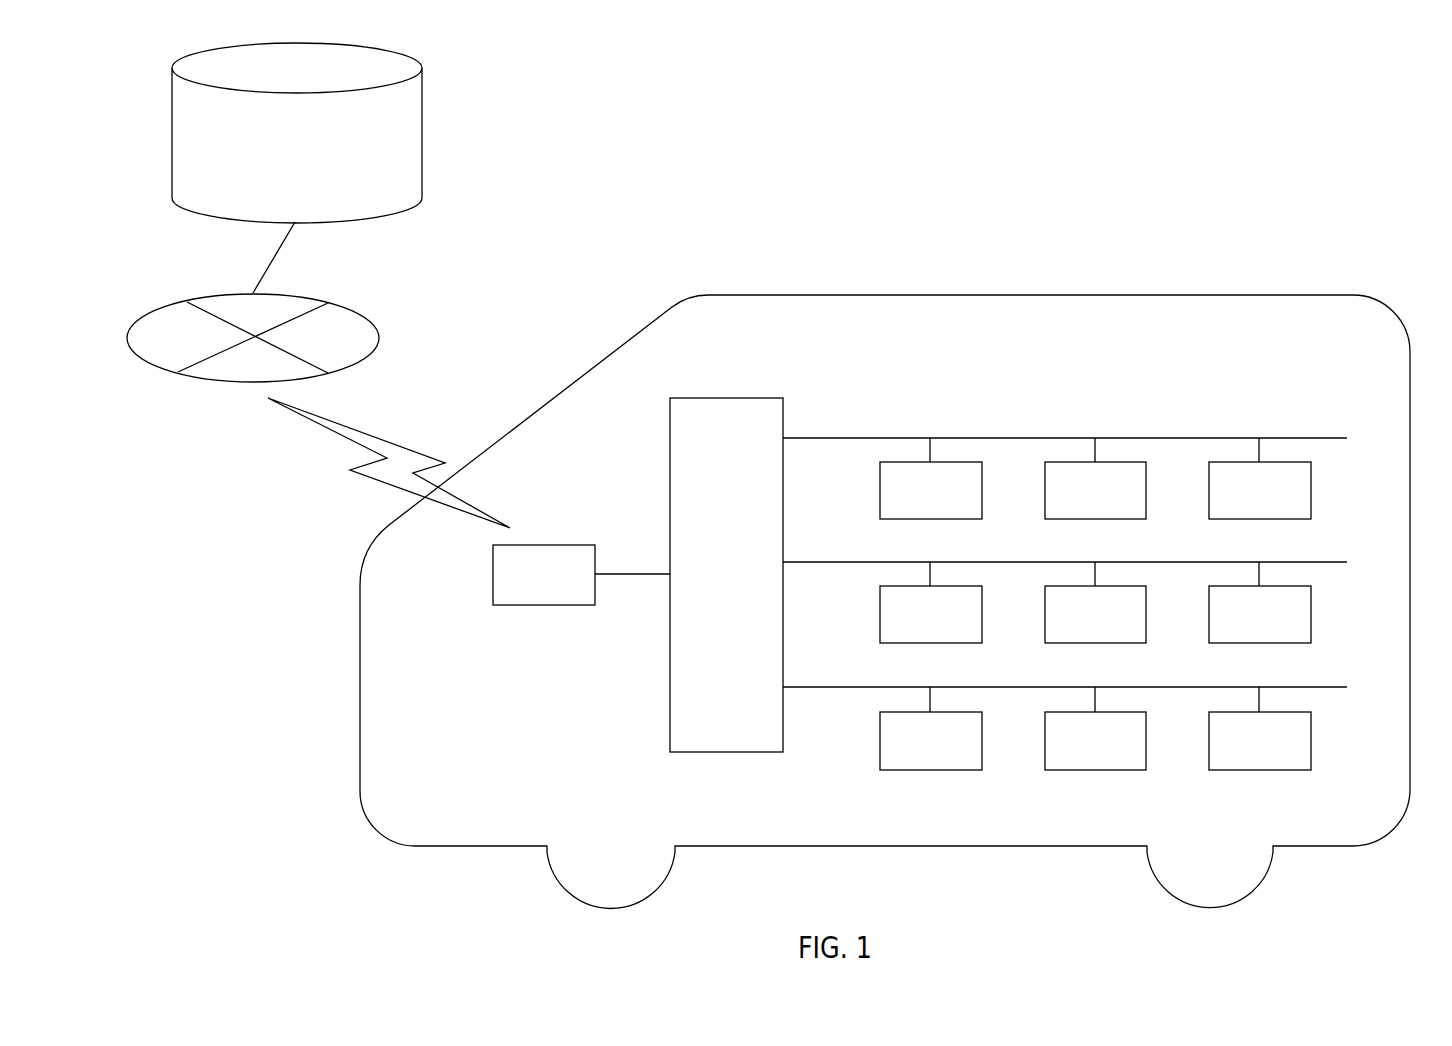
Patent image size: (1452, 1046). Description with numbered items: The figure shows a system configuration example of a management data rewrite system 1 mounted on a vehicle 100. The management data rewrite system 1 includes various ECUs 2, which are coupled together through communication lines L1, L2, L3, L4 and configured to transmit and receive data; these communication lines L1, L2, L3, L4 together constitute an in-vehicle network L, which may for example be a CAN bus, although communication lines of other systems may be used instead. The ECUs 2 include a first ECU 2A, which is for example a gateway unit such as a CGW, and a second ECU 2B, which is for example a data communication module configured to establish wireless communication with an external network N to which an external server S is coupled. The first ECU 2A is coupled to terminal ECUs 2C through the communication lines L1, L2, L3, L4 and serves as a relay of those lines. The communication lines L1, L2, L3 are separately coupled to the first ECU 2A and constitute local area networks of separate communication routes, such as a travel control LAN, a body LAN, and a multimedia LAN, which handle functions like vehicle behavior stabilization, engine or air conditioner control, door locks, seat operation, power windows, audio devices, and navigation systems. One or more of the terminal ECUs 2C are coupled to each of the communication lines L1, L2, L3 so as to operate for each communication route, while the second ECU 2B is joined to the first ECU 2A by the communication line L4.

The management data rewrite system 1 is at (1122, 320).
The vehicle 100 is at (975, 295).
The ECU 2 is at (921, 544).
The first ECU 2A is at (707, 397).
The second ECU 2B is at (547, 545).
The terminal ECU 2C is at (960, 462).
The in-vehicle network L is at (971, 530).
The communication line L1 is at (823, 437).
The communication line L2 is at (812, 562).
The communication line L3 is at (812, 687).
The communication line L4 is at (608, 574).
The external server S is at (422, 128).
The external network N is at (379, 320).